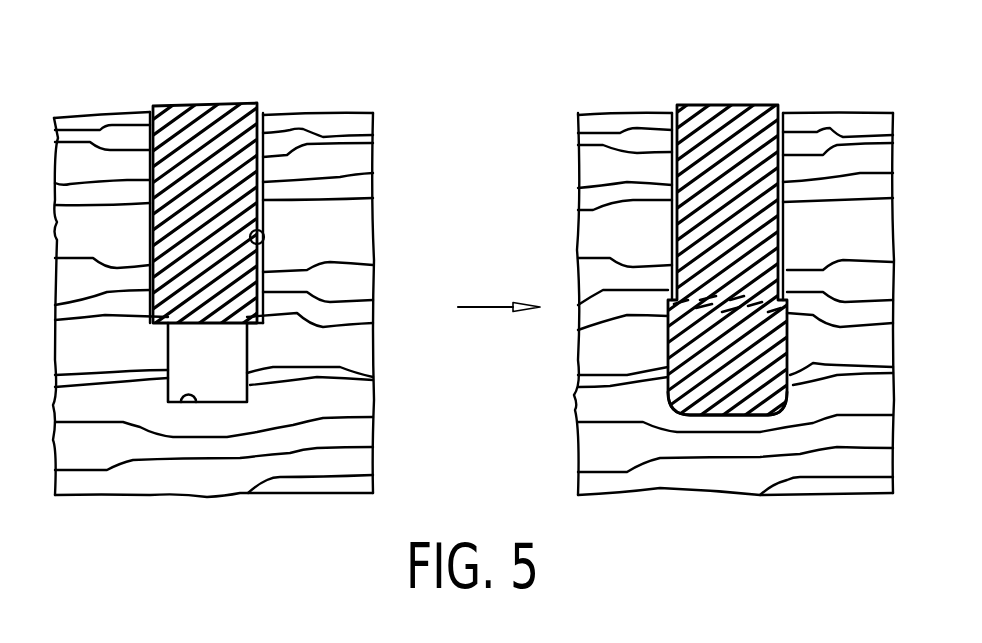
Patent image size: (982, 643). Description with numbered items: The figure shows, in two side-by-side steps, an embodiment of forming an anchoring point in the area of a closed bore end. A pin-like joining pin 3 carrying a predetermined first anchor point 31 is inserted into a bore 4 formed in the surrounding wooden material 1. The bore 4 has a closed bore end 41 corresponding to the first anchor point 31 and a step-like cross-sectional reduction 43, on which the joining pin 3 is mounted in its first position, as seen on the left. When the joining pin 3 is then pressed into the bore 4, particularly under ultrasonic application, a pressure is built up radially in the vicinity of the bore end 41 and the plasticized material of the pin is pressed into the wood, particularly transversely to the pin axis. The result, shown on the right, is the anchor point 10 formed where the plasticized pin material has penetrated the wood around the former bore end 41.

The wooden workpiece 1 is at (322, 125).
The joining pin 3 is at (467, 274).
The bore 4 is at (263, 236).
The anchor point 10 is at (713, 420).
The first anchor point 31 is at (202, 297).
The bore end 41 is at (182, 403).
The step-like cross-sectional reduction 43 is at (253, 332).